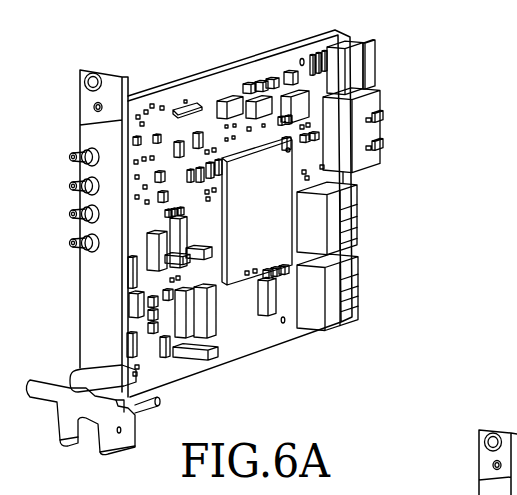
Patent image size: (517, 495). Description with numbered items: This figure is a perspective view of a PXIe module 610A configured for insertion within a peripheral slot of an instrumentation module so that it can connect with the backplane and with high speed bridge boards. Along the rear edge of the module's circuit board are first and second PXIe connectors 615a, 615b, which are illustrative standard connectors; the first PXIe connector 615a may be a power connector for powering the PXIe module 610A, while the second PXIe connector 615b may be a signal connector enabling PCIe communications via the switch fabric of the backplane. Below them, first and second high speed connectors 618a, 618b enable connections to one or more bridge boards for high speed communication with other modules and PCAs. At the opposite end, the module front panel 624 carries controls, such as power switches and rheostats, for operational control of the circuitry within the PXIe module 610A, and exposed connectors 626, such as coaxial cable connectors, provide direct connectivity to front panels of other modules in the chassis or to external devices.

The PXIe module 610A is at (216, 76).
The module front panel 624 is at (83, 128).
The exposed connectors 626 is at (58, 142).
The first PXIe connector 615a is at (358, 62).
The second PXIe connector 615b is at (372, 128).
The first high speed connector 618a is at (342, 217).
The second high speed connector 618b is at (342, 287).